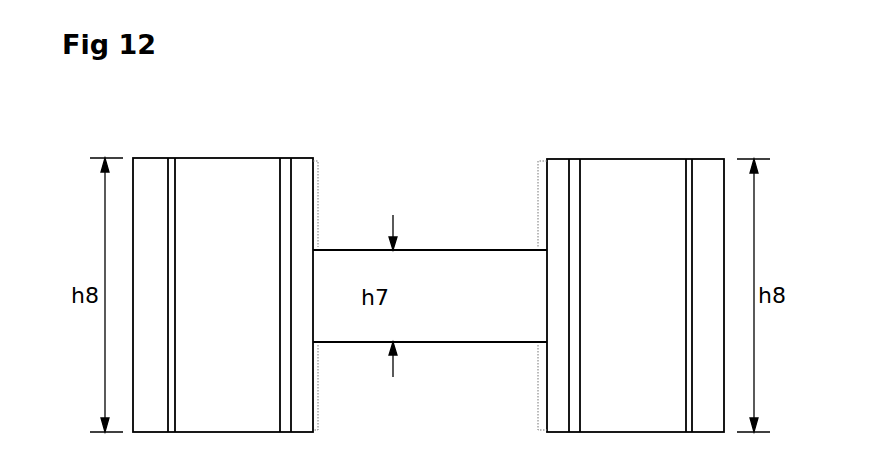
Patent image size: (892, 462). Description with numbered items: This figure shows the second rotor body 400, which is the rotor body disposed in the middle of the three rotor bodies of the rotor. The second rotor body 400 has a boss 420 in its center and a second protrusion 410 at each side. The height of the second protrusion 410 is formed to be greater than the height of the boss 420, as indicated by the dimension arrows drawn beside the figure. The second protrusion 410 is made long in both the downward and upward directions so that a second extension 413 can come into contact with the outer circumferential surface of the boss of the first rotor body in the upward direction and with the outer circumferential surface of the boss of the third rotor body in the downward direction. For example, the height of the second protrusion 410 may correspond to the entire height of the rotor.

The second protrusion 410 is at (232, 157).
The second rotor body 400 is at (445, 249).
The boss 420 is at (442, 343).
The second extension 413 is at (320, 210).